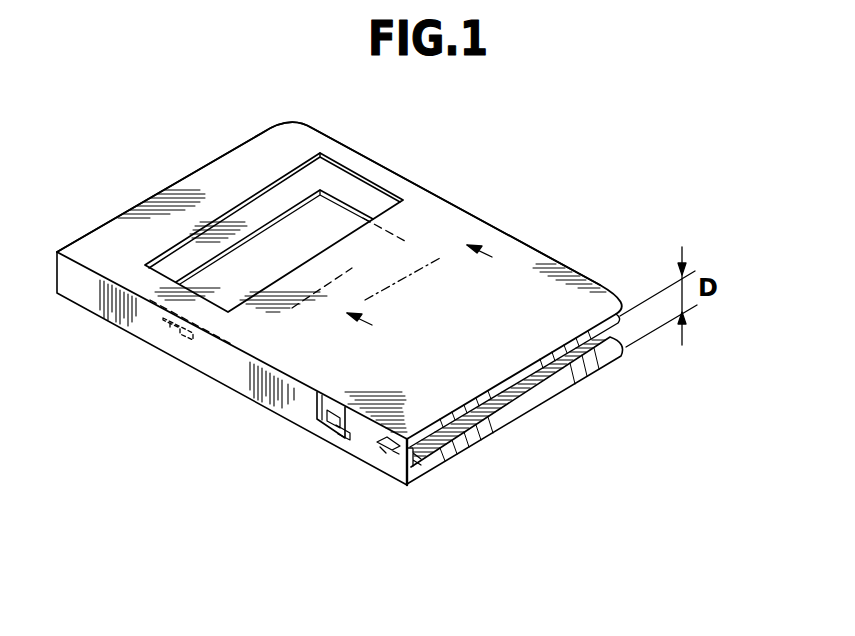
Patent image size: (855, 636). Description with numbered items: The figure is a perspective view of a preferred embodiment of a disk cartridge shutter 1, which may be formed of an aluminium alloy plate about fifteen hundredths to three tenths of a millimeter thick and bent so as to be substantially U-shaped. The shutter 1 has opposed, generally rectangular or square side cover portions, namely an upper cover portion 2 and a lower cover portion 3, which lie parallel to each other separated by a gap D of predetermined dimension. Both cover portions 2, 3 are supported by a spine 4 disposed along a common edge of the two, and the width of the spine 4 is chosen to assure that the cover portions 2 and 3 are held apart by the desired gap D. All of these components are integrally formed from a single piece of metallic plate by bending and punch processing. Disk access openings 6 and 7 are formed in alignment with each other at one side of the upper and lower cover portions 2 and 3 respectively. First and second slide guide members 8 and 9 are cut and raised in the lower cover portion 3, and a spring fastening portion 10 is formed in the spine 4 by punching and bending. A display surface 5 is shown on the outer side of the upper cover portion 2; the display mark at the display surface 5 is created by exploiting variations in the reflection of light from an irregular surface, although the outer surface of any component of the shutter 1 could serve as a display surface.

The shutter 1 is at (387, 481).
The upper cover portion 2 is at (545, 438).
The lower cover portion 3 is at (467, 430).
The spine 4 is at (428, 467).
The display surface 5 is at (427, 268).
The disk access opening 6 is at (245, 195).
The disk access opening 7 is at (291, 207).
The first slide guide member 8 is at (384, 454).
The second slide guide member 9 is at (180, 334).
The spring fastening portion 10 is at (328, 430).